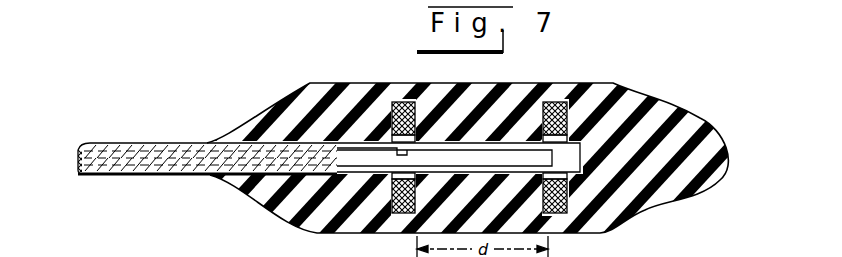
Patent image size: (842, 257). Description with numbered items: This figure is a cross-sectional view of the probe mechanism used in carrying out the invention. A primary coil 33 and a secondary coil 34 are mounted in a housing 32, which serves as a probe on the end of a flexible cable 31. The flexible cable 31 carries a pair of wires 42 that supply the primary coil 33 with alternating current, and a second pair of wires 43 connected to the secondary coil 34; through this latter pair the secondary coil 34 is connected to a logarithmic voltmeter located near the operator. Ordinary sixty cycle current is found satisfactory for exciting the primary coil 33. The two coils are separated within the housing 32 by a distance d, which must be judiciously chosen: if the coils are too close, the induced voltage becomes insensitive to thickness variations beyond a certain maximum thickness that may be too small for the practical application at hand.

The flexible cable 31 is at (107, 177).
The housing 32 is at (612, 82).
The primary coil 33 is at (392, 100).
The secondary coil 34 is at (562, 97).
The pair of wires 42 is at (78, 152).
The second pair of wires 43 is at (78, 160).